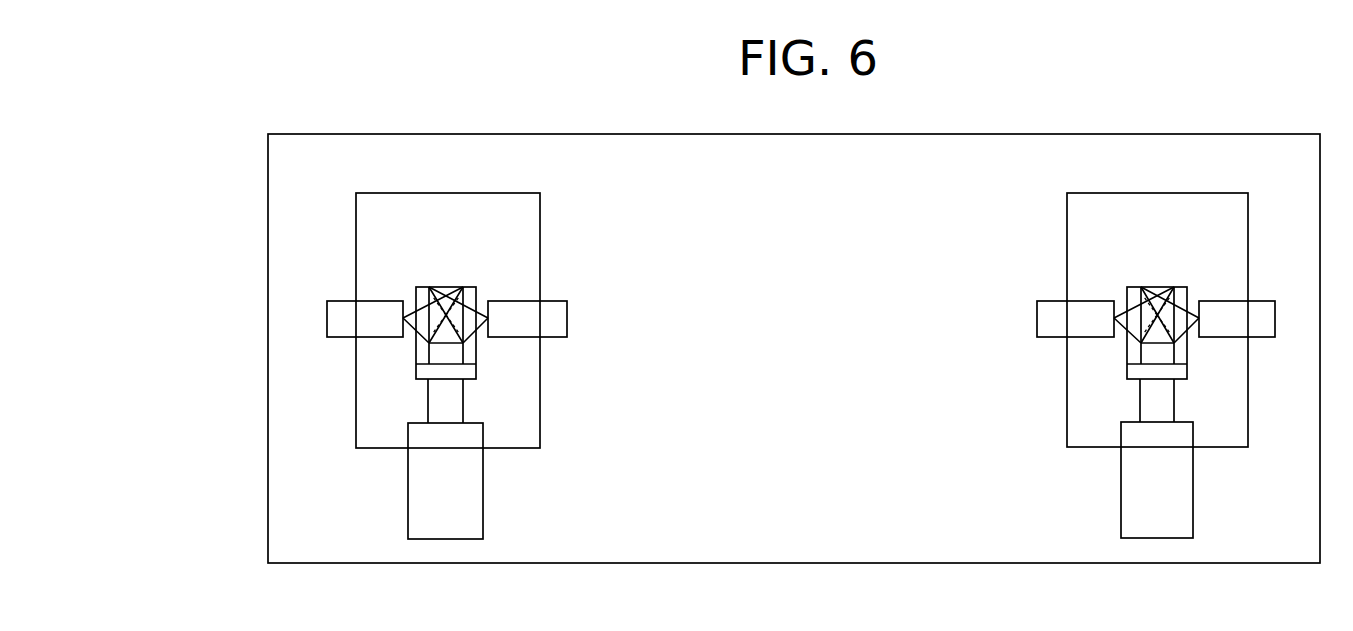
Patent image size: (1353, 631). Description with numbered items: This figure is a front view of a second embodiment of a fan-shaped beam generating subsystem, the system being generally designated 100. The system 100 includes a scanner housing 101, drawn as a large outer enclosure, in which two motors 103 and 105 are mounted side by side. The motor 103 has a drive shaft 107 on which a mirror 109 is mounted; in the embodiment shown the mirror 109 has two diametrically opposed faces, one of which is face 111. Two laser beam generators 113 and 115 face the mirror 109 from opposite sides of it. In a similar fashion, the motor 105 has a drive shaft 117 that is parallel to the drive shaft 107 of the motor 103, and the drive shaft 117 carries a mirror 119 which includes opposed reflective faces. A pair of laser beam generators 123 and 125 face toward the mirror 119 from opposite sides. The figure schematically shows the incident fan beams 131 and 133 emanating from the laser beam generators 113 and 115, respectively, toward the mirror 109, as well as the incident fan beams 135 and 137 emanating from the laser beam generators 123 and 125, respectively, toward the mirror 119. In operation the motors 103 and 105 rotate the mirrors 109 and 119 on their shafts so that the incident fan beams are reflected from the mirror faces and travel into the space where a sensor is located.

The system 100 is at (285, 576).
The scanner housing 101 is at (537, 563).
The motor 103 is at (422, 503).
The motor 105 is at (1180, 502).
The drive shaft 107 is at (452, 403).
The mirror 109 is at (397, 364).
The face 111 is at (450, 286).
The laser beam generator 113 is at (333, 317).
The laser beam generator 115 is at (556, 315).
The drive shaft 117 is at (1161, 400).
The mirror 119 is at (1107, 371).
The laser beam generator 123 is at (1047, 315).
The laser beam generator 125 is at (1263, 313).
The incident fan beam 131 is at (423, 312).
The incident fan beam 133 is at (473, 313).
The incident fan beam 135 is at (1138, 313).
The incident fan beam 137 is at (1172, 318).